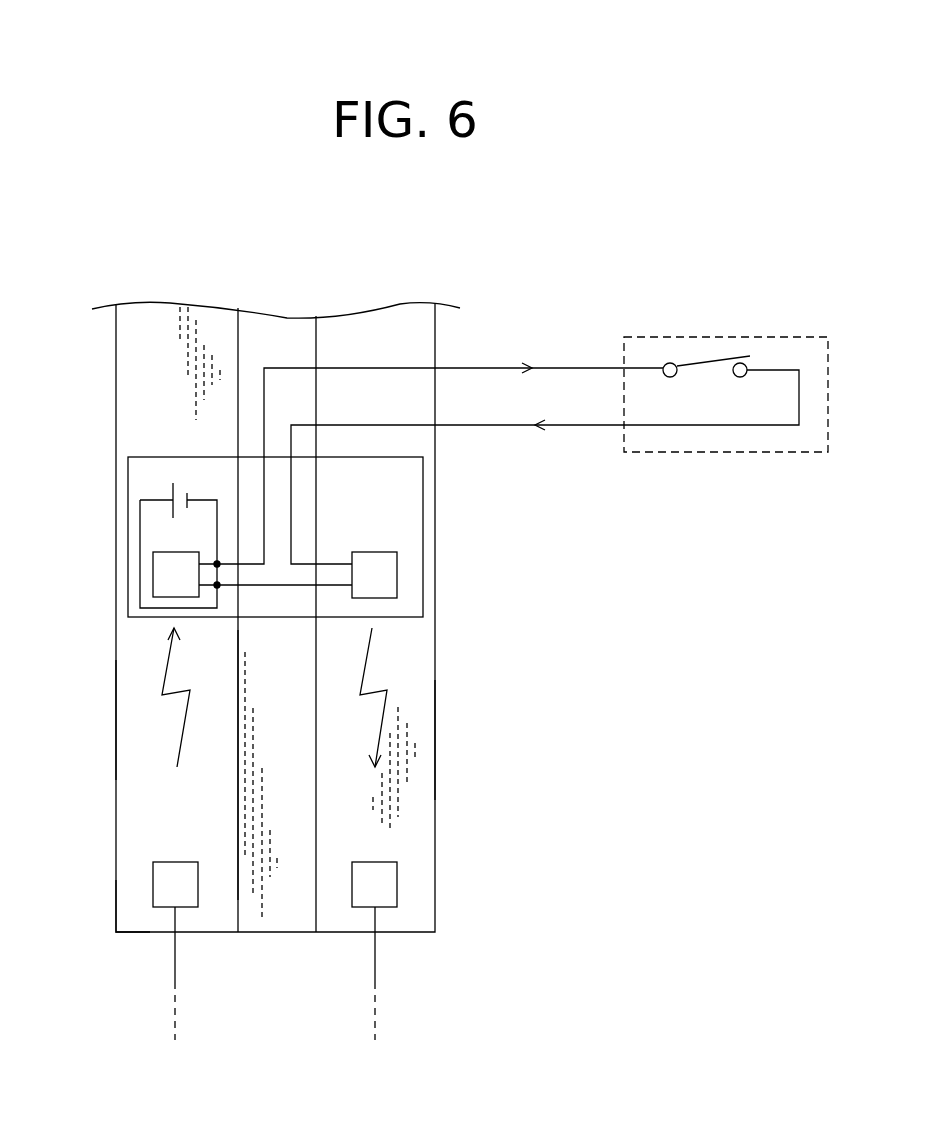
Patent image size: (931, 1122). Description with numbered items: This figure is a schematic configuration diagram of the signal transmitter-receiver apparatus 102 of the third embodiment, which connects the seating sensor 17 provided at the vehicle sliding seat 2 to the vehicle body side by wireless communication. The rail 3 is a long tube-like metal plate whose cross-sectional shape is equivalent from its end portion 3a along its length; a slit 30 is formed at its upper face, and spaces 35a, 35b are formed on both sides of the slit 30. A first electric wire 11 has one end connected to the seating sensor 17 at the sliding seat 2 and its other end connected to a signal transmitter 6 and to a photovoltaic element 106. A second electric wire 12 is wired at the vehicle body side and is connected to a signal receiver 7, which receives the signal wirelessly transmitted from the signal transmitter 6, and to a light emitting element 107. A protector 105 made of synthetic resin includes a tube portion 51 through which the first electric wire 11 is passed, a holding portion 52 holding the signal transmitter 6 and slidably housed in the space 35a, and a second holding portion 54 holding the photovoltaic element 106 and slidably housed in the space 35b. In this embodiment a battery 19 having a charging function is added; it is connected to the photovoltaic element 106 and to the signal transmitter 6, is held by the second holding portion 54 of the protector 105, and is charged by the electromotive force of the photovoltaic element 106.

The vehicle sliding seat 2 is at (797, 337).
The rail 3 is at (437, 917).
The end portion of rail 3a is at (110, 897).
The signal transmitter 6 is at (397, 583).
The signal receiver 7 is at (387, 890).
The first electric wire 11 is at (363, 423).
The second electric wire 12 is at (373, 955).
The seating sensor 17 is at (708, 357).
The battery 19 is at (163, 483).
The slit 30 is at (250, 813).
The space 35a is at (427, 742).
The space 35b is at (127, 717).
The tube portion 51 is at (273, 620).
The holding portion 52 is at (403, 620).
The second holding portion 54 is at (145, 620).
The signal transmitter-receiver apparatus 102 is at (543, 547).
The protector 105 is at (425, 483).
The photovoltaic element 106 is at (153, 575).
The light emitting element 107 is at (158, 876).